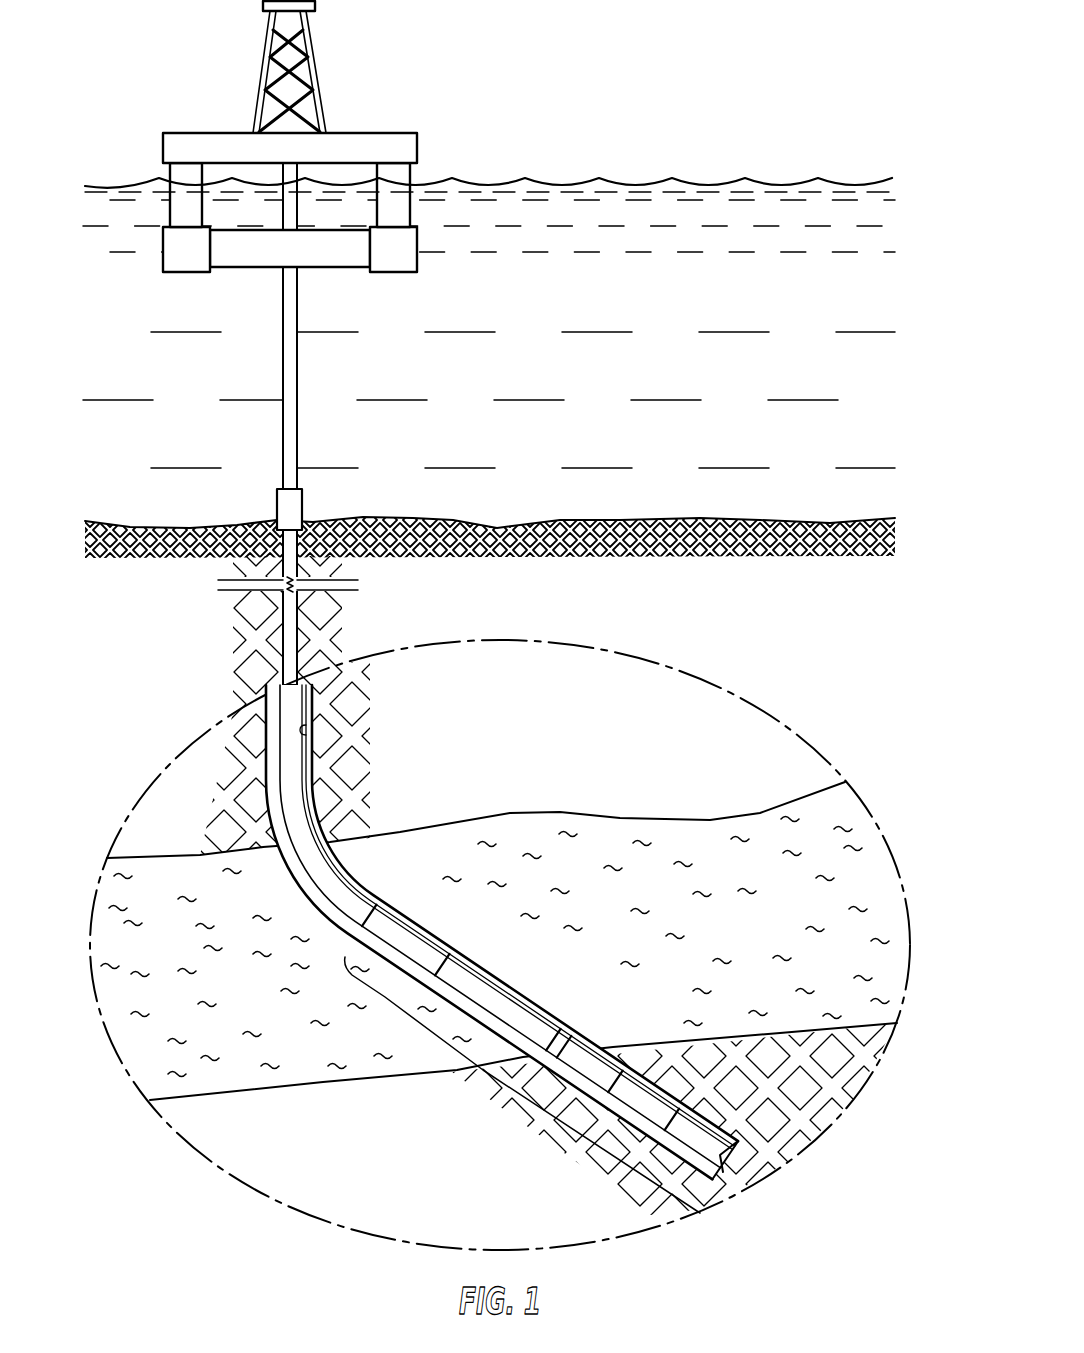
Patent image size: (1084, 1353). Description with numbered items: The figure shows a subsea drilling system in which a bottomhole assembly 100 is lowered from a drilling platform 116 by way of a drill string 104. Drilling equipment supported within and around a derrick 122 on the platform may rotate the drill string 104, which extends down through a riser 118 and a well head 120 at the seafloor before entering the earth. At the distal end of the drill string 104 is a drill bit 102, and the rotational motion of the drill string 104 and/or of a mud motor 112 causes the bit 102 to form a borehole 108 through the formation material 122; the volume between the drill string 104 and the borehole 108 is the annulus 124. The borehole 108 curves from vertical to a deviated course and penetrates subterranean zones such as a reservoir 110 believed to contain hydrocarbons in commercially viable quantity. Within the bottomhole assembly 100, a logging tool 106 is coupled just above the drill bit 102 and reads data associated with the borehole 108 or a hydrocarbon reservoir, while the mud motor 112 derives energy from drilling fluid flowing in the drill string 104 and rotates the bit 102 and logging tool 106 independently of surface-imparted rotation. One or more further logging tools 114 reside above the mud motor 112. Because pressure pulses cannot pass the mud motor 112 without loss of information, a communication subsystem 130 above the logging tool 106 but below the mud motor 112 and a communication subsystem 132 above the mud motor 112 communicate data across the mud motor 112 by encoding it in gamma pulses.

The bottomhole assembly 100 is at (500, 1100).
The drill bit 102 is at (723, 1110).
The drill string 104 is at (340, 888).
The logging tool 106 is at (677, 1073).
The borehole 108 is at (306, 738).
The reservoir 110 is at (765, 938).
The mud motor 112 is at (587, 1053).
The further logging tools 114 is at (468, 973).
The drilling platform 116 is at (417, 150).
The riser 118 is at (298, 373).
The well head 120 is at (302, 500).
The derrick 122 is at (312, 44).
The annulus 124 is at (309, 793).
The communication subsystem 130 is at (617, 1047).
The communication subsystem 132 is at (545, 1038).